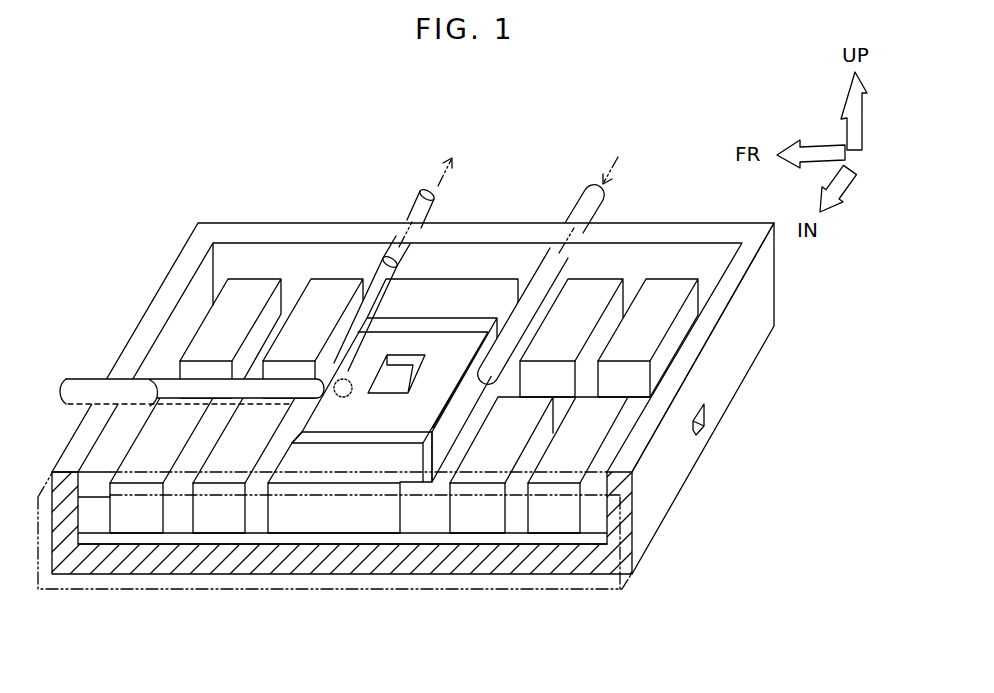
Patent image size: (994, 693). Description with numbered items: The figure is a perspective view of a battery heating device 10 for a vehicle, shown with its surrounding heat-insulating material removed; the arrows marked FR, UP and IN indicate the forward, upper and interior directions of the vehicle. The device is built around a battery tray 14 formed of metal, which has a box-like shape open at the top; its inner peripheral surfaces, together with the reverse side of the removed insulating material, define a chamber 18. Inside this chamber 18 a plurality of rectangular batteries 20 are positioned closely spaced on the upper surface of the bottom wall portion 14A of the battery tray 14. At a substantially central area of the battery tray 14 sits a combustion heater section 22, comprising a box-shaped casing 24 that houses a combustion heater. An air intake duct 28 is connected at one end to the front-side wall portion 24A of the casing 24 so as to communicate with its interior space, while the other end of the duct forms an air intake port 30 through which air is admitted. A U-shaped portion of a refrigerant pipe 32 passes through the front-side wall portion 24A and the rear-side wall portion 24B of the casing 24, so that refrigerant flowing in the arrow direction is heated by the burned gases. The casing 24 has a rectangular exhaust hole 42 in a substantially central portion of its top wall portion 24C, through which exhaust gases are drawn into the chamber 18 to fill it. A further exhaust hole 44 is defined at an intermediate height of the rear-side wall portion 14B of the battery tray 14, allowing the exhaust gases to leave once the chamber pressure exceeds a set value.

The battery heating device 10 is at (306, 172).
The battery tray 14 is at (683, 498).
The bottom wall portion 14A is at (390, 560).
The rear-side wall portion 14B is at (742, 363).
The chamber 18 is at (105, 455).
The batteries 20 is at (332, 287).
The combustion heater section 22 is at (430, 313).
The casing 24 is at (371, 498).
The front-side wall portion 24A is at (292, 417).
The rear-side wall portion 24B is at (453, 422).
The top wall portion 24C is at (417, 415).
The air intake duct 28 is at (163, 380).
The air intake port 30 is at (63, 390).
The refrigerant pipe 32 is at (417, 193).
The exhaust hole 42 is at (393, 387).
The exhaust hole 44 is at (700, 433).